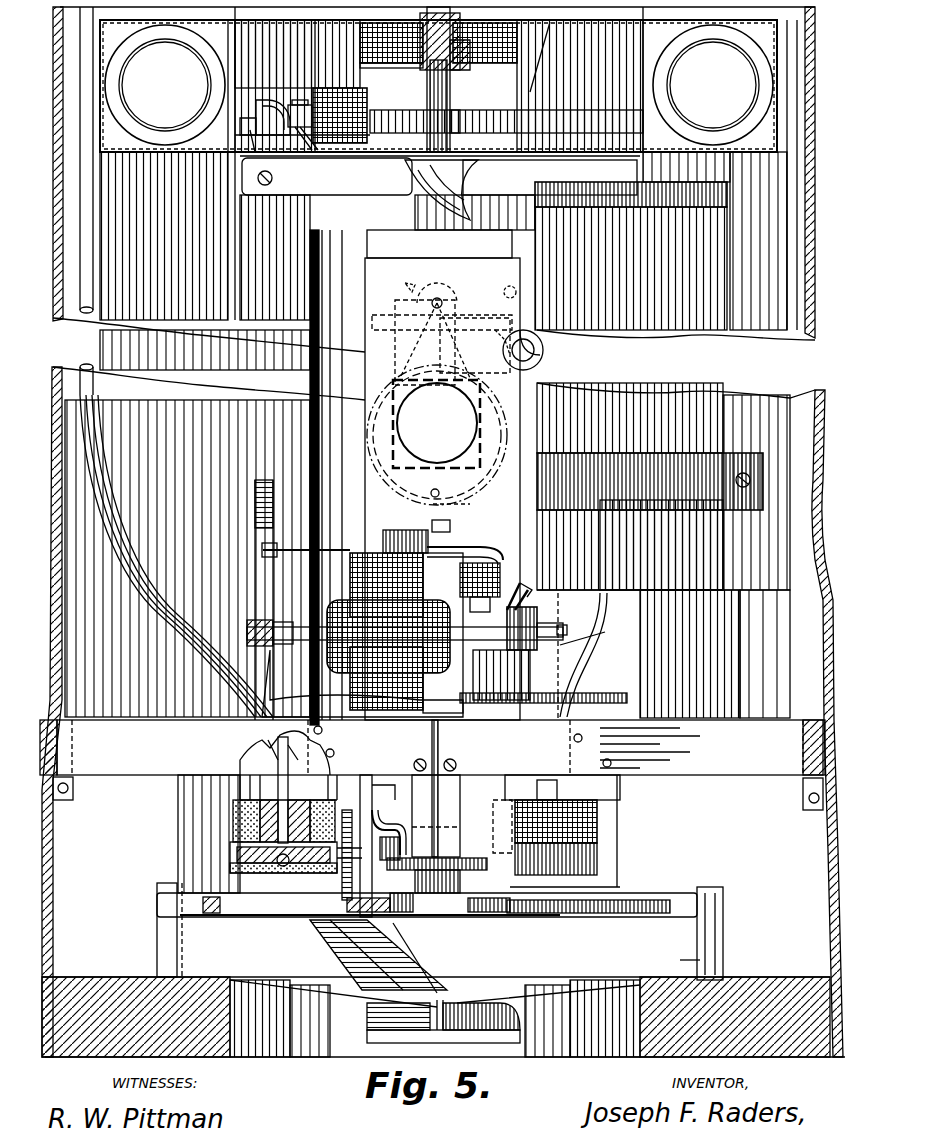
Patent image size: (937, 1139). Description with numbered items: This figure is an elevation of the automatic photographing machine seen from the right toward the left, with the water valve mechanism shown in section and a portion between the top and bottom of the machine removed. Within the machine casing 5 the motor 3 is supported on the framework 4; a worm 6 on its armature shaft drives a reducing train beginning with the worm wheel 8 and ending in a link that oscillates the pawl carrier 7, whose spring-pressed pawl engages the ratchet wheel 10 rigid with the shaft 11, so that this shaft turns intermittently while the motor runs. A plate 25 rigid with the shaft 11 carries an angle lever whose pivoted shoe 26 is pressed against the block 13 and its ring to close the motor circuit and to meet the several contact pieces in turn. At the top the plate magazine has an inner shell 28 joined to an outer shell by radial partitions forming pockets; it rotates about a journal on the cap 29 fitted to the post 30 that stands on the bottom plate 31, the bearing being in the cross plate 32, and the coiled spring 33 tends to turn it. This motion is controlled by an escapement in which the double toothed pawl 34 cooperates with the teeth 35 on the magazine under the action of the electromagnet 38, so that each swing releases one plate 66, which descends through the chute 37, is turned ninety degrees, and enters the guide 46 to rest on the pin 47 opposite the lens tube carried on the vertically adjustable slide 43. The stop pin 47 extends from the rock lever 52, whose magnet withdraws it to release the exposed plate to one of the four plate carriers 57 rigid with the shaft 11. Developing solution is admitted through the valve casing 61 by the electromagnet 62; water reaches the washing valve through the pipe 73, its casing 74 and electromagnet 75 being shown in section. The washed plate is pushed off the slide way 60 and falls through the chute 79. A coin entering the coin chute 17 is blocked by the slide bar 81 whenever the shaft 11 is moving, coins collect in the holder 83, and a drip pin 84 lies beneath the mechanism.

The motor 3 is at (405, 623).
The framework 4 is at (445, 730).
The machine casing 5 is at (793, 679).
The worm 6 is at (537, 622).
The pawl carrier 7 is at (487, 665).
The worm wheel 8 is at (560, 628).
The ratchet wheel 10 is at (490, 723).
The shaft 11 is at (438, 510).
The block 13 is at (510, 605).
The coin chute 17 is at (282, 505).
The plate 25 is at (500, 563).
The shoe 26 is at (540, 585).
The inner shell 28 is at (655, 68).
The cap 29 is at (455, 70).
The post 30 is at (430, 80).
The bottom plate 31 is at (530, 160).
The cross plate 32 is at (521, 67).
The coiled spring 33 is at (380, 63).
The double toothed pawl 34 is at (238, 125).
The teeth 35 is at (530, 123).
The chute 37 is at (410, 180).
The electromagnet 38 is at (340, 88).
The slide 43 is at (370, 498).
The guide 46 is at (370, 280).
The pin 47 is at (440, 492).
The rock lever 52 is at (362, 375).
The plate carriers 57 is at (212, 913).
The slide way 60 is at (540, 920).
The valve casing 61 is at (590, 868).
The electromagnet 62 is at (590, 828).
The plate 66 is at (439, 85).
The pipe 73 is at (112, 320).
The casing 74 is at (232, 860).
The electromagnet 75 is at (257, 825).
The chute 79 is at (440, 920).
The slide bar 81 is at (298, 556).
The holder 83 is at (720, 920).
The drip pin 84 is at (700, 960).